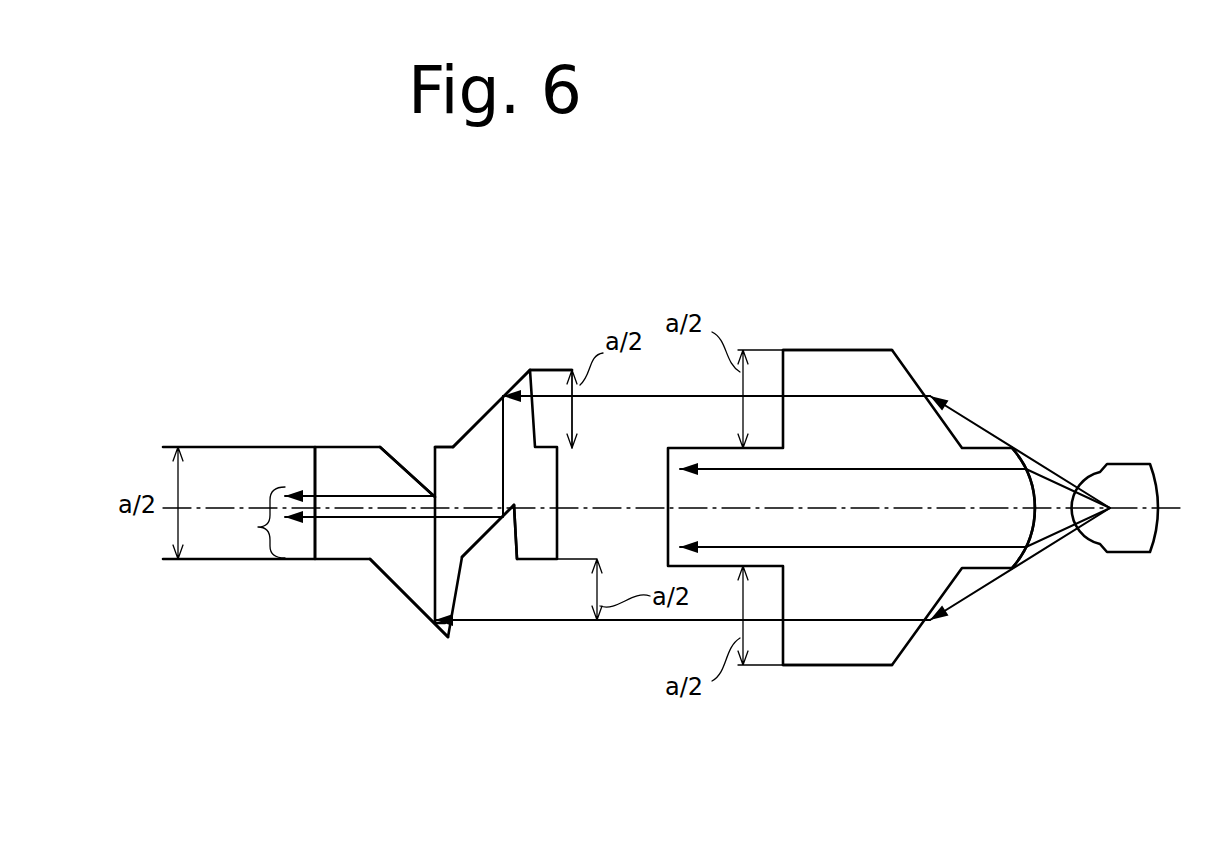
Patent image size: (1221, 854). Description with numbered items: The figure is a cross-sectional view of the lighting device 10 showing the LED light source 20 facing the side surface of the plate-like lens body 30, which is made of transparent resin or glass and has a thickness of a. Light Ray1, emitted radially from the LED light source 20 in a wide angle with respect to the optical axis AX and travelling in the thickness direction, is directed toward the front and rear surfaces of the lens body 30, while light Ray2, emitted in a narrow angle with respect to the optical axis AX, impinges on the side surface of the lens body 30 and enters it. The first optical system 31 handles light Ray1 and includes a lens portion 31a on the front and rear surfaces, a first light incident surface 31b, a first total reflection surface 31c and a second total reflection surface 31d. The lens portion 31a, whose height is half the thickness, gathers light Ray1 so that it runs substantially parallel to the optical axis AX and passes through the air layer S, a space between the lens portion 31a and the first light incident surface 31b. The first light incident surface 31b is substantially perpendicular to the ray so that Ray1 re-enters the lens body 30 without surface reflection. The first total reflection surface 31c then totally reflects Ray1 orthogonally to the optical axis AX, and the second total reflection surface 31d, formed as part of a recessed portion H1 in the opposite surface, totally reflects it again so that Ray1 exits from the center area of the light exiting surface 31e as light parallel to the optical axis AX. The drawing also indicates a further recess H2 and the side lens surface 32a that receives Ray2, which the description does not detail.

The light emitting device 10 is at (719, 148).
The LED light source 20 is at (1147, 462).
The lens body 30 is at (881, 350).
The first optical system 31 is at (954, 325).
The lens portion 31a is at (829, 350).
The first light incident surface 31b is at (535, 373).
The first total reflection surface 31c is at (475, 424).
The second total reflection surface 31d is at (394, 466).
The light exiting surface 31e is at (312, 462).
The incident lens surface 32a is at (1024, 460).
The optical axis AX is at (671, 505).
The light Ray1 is at (1012, 384).
The light Ray2 is at (1053, 478).
The recessed portion H1 is at (432, 458).
The step height H2 is at (612, 475).
The air layer S is at (650, 408).